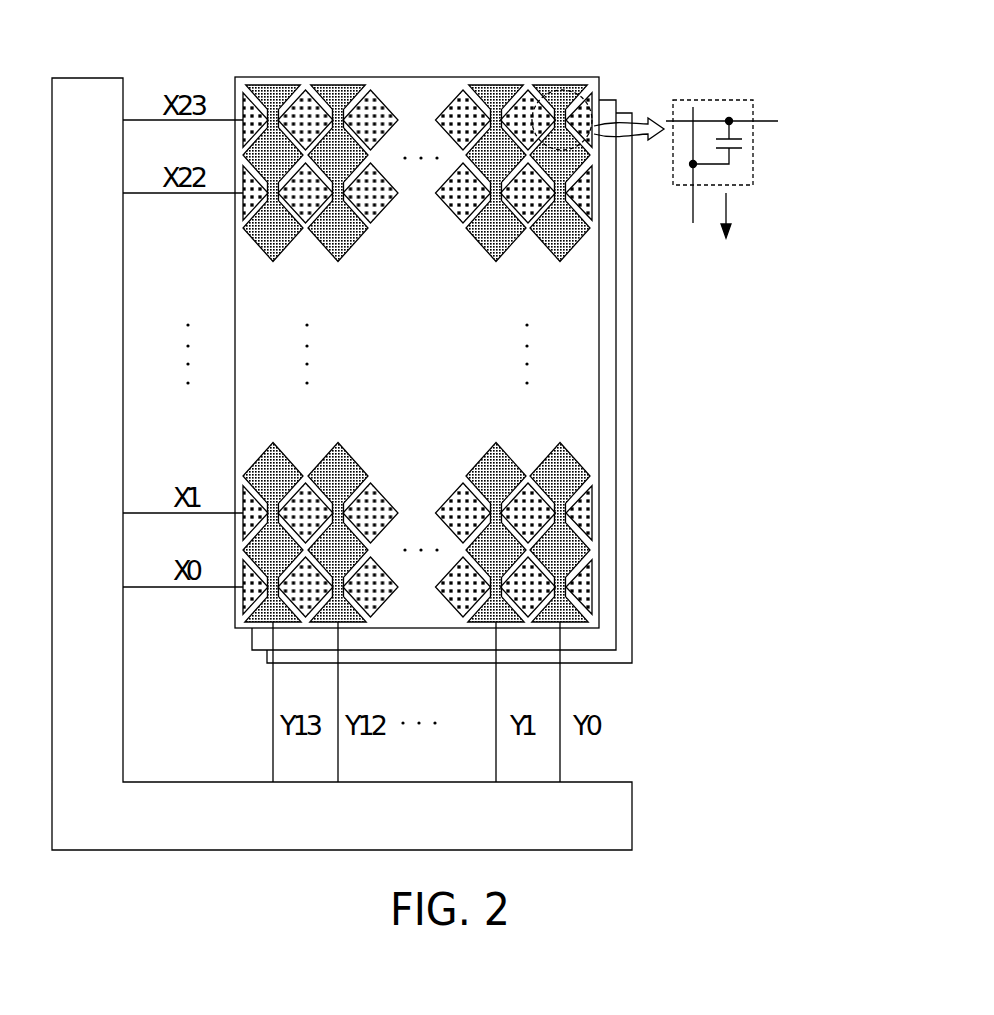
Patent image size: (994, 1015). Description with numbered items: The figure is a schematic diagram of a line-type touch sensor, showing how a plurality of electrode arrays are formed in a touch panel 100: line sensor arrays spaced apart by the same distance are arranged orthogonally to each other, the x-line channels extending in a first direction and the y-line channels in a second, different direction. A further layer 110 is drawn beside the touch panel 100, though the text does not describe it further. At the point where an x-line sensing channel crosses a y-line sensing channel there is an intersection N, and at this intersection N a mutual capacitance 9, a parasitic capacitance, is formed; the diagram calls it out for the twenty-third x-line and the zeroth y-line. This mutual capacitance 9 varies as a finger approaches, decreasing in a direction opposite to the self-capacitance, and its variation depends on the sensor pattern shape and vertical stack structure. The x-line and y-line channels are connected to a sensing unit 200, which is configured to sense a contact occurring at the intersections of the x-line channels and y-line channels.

The sensing unit 200 is at (85, 78).
The touch panel 100 is at (602, 320).
The substrate 110 is at (627, 413).
The mutual capacitance 9 is at (735, 153).
The intersection N is at (563, 87).